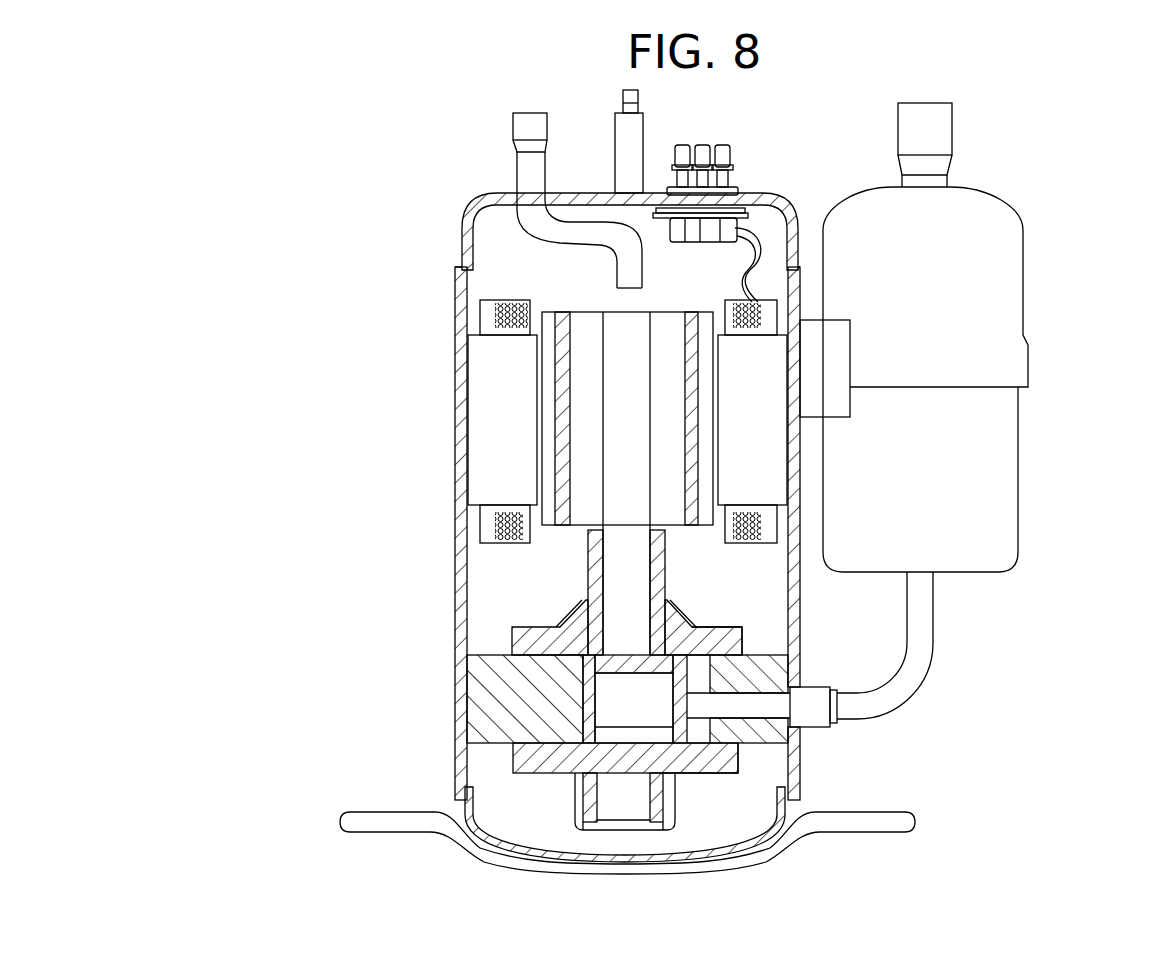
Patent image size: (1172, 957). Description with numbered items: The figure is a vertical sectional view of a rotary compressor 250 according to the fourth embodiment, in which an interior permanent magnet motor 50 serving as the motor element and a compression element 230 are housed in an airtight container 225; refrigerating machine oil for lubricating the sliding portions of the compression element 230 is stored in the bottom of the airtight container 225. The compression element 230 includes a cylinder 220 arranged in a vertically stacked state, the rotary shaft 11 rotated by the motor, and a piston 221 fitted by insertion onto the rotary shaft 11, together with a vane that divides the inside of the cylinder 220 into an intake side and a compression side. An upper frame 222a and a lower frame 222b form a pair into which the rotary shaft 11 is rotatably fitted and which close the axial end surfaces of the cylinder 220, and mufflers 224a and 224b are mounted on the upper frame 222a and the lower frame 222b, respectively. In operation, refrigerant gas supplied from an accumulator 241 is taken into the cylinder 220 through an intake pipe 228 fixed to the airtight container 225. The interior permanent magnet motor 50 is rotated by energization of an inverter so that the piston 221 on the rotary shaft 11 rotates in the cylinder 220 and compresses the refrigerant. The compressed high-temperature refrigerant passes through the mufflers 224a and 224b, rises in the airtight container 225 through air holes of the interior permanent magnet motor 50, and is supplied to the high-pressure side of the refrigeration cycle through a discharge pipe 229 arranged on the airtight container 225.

The rotary compressor 250 is at (198, 178).
The airtight container 225 is at (478, 200).
The discharge pipe 229 is at (515, 174).
The interior permanent magnet motor 50 is at (498, 280).
The accumulator 241 is at (1030, 318).
The rotary shaft 11 is at (620, 585).
The upper muffler 224a is at (571, 617).
The upper frame 222a is at (700, 636).
The cylinder 220 is at (487, 656).
The piston 221 is at (582, 692).
The compression element 230 is at (480, 779).
The lower muffler 224b is at (580, 800).
The lower frame 222b is at (730, 768).
The intake pipe 228 is at (933, 662).